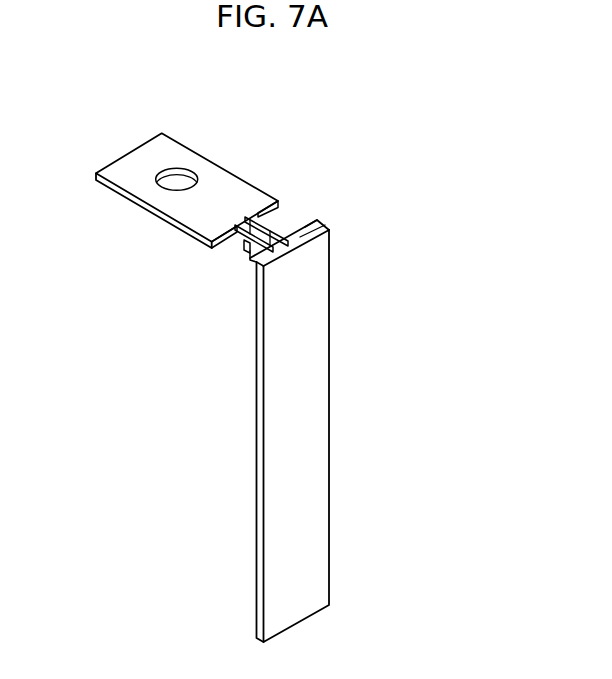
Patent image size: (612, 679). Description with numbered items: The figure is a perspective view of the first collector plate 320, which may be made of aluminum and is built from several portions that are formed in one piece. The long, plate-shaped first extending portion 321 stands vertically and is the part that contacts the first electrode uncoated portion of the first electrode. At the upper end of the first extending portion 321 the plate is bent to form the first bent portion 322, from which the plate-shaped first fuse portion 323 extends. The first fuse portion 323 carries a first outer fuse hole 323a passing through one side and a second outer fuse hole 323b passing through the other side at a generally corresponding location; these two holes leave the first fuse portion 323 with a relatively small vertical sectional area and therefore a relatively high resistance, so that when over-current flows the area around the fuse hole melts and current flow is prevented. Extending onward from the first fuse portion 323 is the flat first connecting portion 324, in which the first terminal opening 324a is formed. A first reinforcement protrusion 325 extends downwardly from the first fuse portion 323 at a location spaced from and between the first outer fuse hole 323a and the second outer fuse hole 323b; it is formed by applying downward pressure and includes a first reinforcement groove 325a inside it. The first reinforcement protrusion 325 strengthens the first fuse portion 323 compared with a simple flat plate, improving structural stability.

The first collector plate 320 is at (376, 213).
The first extending portion 321 is at (325, 369).
The first bent portion 322 is at (302, 246).
The first fuse portion 323 is at (285, 220).
The first outer fuse hole 323a is at (278, 217).
The second outer fuse hole 323b is at (220, 247).
The first connecting portion 324 is at (140, 158).
The first terminal opening 324a is at (178, 177).
The first reinforcement protrusion 325 is at (250, 243).
The first reinforcement groove 325a is at (317, 221).